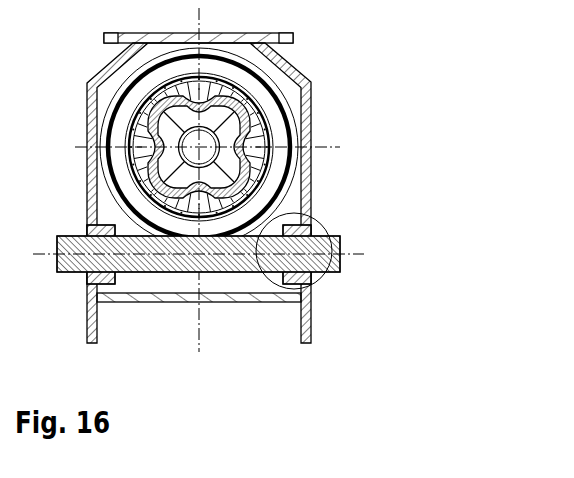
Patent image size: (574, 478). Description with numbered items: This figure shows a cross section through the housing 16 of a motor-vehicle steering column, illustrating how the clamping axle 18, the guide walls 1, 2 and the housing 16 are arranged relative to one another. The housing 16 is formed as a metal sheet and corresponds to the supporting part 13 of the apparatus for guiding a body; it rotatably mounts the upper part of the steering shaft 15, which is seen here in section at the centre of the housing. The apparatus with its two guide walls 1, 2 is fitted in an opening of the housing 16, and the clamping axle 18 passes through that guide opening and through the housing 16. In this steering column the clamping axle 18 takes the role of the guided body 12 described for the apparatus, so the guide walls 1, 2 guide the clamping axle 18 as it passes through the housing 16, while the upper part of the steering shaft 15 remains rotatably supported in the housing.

The housing 16 is at (253, 180).
The supporting part 13 is at (292, 66).
The steering shaft 15 is at (134, 134).
The guide wall 1 is at (316, 215).
The guided body 12 is at (247, 232).
The clamping axle 18 is at (326, 243).
The guide wall 2 is at (304, 281).